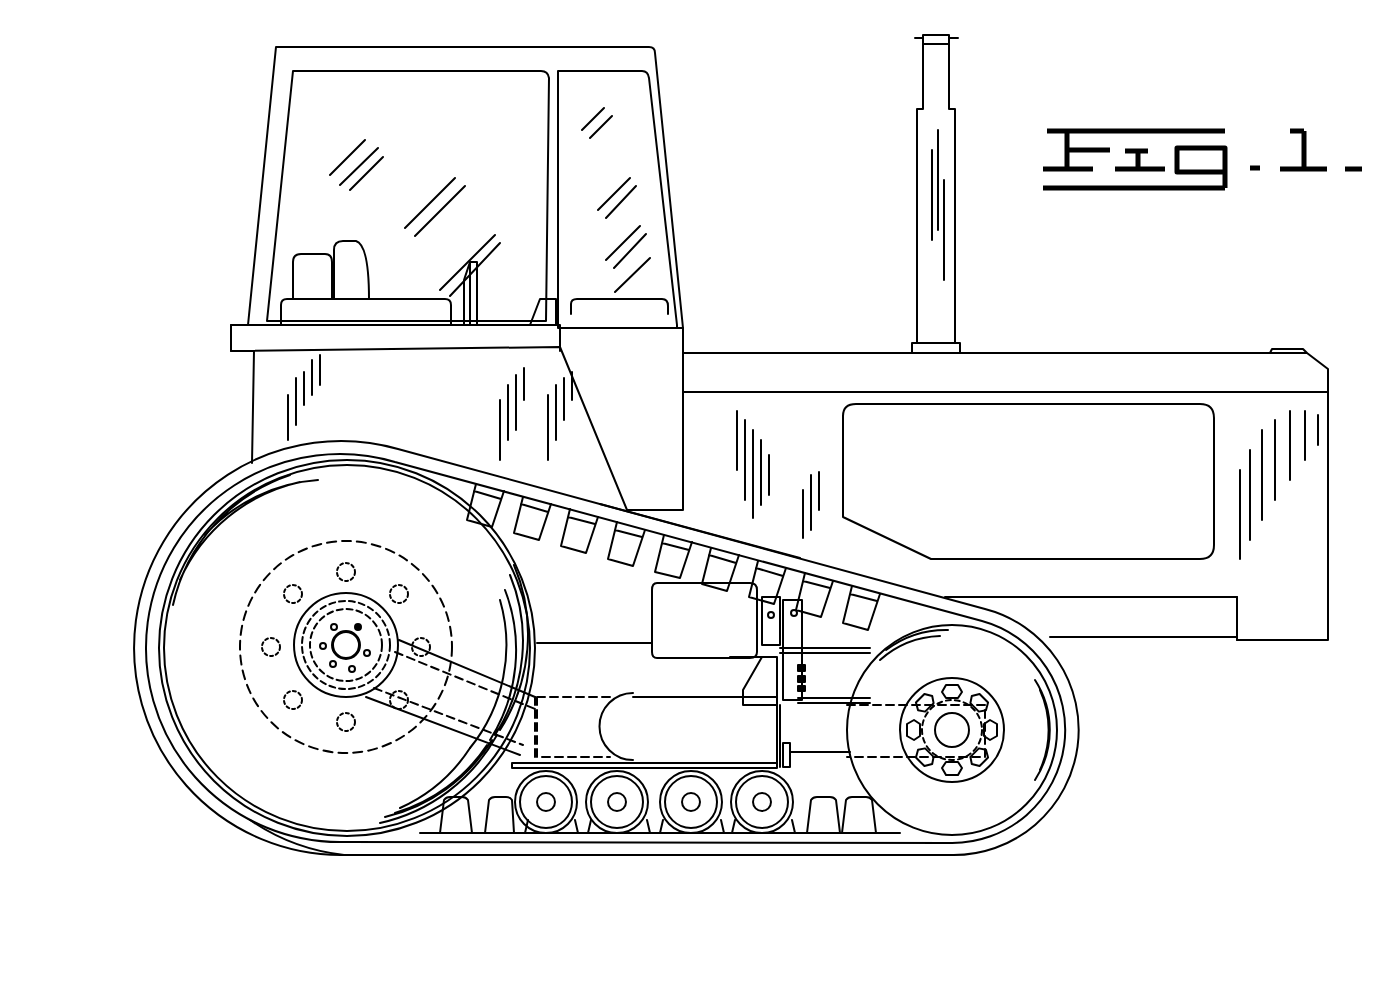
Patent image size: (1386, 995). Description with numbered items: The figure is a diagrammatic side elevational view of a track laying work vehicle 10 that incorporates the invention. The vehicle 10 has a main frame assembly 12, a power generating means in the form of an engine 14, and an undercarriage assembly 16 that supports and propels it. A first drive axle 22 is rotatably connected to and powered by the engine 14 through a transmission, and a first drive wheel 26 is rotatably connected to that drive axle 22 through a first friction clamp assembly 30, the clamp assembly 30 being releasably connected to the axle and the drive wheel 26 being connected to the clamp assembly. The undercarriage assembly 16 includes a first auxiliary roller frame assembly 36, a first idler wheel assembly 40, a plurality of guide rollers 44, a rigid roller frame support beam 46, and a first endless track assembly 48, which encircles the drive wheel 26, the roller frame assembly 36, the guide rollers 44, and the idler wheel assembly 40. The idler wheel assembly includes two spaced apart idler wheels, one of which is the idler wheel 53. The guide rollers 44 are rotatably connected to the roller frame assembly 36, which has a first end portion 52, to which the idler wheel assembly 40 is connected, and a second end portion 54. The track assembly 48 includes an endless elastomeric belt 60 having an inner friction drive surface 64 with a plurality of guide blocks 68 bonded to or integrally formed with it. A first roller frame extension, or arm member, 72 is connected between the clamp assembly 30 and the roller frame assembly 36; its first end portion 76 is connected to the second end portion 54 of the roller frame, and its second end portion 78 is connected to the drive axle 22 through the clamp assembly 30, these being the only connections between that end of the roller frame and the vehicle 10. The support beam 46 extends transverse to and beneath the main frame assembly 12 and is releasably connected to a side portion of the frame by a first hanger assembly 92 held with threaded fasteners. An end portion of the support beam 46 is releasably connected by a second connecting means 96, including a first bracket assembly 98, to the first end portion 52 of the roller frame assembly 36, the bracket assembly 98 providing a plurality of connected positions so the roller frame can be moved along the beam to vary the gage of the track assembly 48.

The track laying work vehicle 10 is at (722, 259).
The main frame assembly 12 is at (1170, 630).
The engine 14 is at (944, 471).
The undercarriage assembly 16 is at (491, 857).
The first drive axle 22 is at (307, 645).
The first drive wheel 26 is at (204, 750).
The first friction clamp assembly 30 is at (368, 598).
The first auxiliary roller frame assembly 36 is at (635, 712).
The first idler wheel assembly 40 is at (955, 805).
The guide rollers 44 is at (545, 826).
The rigid roller frame support beam 46 is at (790, 692).
The first endless track assembly 48 is at (288, 840).
The first end portion of the first roller frame assembly 52 is at (797, 748).
The second idler wheel 53 is at (1007, 670).
The second end portion of the first roller frame assembly 54 is at (640, 713).
The endless elastomeric belt 60 is at (740, 560).
The inner friction drive surface 64 is at (608, 533).
The guide blocks 68 is at (503, 528).
The first roller frame extension 72 is at (507, 720).
The first end portion of the first roller frame extension 76 is at (610, 735).
The second end portion of the first roller frame extension 78 is at (418, 682).
The first hanger assembly 92 is at (757, 624).
The second connecting means 96 is at (767, 707).
The first bracket assembly 98 is at (753, 694).